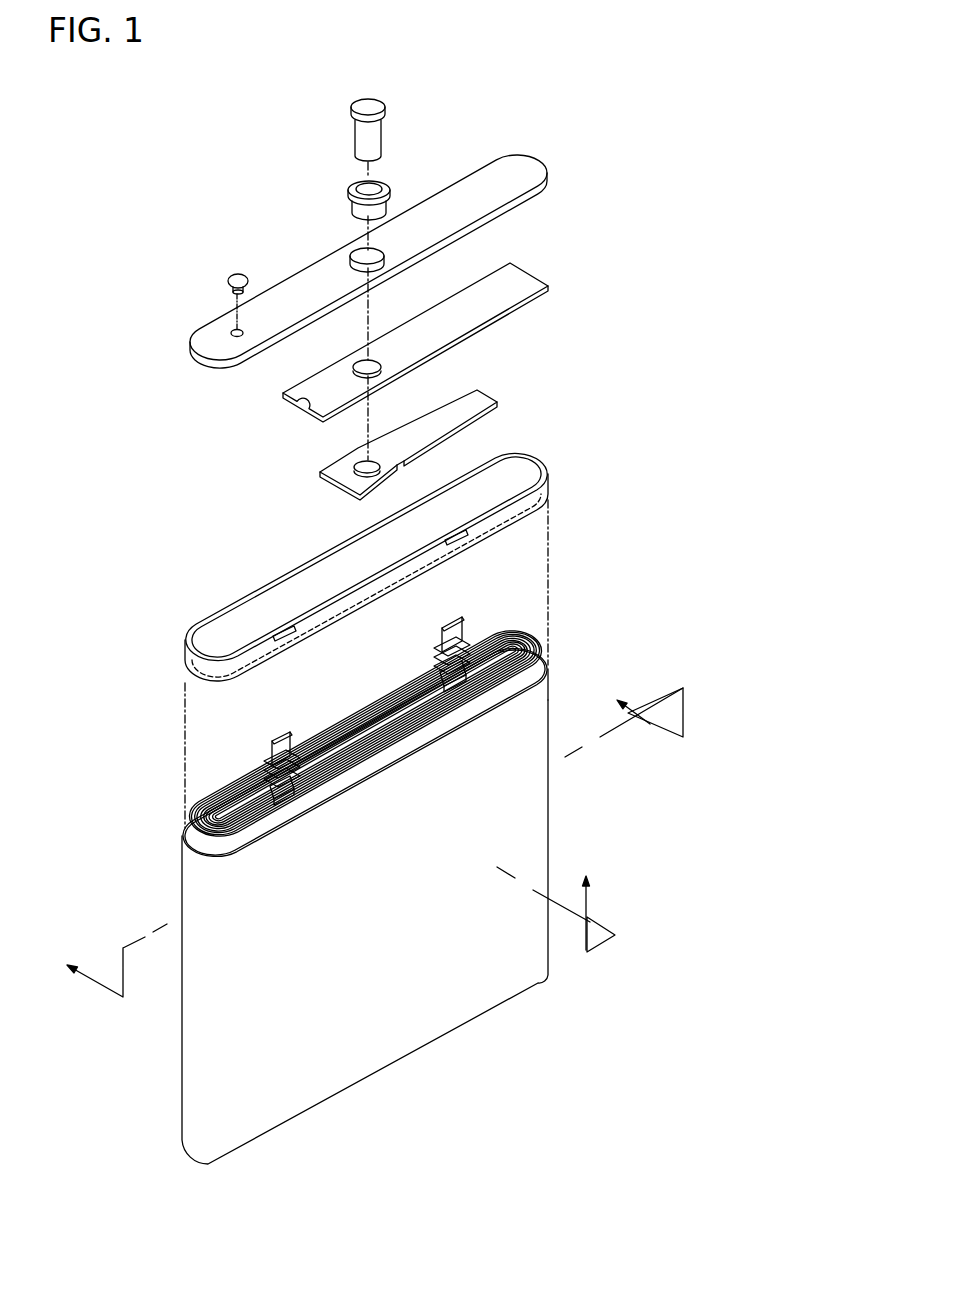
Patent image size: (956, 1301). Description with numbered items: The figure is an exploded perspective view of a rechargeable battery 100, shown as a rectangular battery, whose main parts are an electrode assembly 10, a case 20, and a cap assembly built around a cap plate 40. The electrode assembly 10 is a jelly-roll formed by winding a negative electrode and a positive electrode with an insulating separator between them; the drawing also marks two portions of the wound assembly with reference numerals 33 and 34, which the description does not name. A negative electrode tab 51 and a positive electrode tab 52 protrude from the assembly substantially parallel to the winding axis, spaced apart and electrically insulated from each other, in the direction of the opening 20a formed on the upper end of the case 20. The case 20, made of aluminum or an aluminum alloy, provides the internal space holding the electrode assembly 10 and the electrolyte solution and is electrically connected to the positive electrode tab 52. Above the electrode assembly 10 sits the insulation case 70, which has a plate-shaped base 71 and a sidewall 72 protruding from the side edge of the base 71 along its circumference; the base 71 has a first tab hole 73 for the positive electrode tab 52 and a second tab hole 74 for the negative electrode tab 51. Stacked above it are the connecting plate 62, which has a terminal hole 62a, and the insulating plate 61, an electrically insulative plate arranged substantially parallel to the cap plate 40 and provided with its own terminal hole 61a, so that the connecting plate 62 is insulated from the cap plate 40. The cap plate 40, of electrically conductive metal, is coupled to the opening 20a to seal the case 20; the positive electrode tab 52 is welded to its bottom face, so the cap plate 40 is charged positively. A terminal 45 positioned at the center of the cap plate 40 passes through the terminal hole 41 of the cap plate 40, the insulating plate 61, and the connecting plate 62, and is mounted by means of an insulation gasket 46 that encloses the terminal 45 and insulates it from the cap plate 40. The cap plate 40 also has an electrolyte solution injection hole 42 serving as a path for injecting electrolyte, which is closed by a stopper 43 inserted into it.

The rechargeable battery 100 is at (425, 69).
The electrode assembly 10 is at (535, 628).
The case 20 is at (568, 812).
The opening 20a is at (549, 684).
The first electrode uncoated region 33 is at (247, 812).
The second electrode uncoated region 34 is at (406, 682).
The cap plate 40 is at (529, 168).
The terminal hole 41 is at (384, 254).
The electrolyte solution injection hole 42 is at (232, 332).
The stopper 43 is at (232, 278).
The terminal 45 is at (352, 111).
The insulation gasket 46 is at (350, 192).
The negative electrode tab 51 is at (450, 628).
The positive electrode tab 52 is at (278, 742).
The insulating plate 61 is at (546, 284).
The terminal hole 61a is at (380, 363).
The connecting plate 62 is at (496, 402).
The terminal hole 62a is at (342, 483).
The insulation case 70 is at (181, 618).
The base 71 is at (258, 625).
The sidewall 72 is at (500, 468).
The first tab hole 73 is at (290, 640).
The second tab hole 74 is at (466, 542).